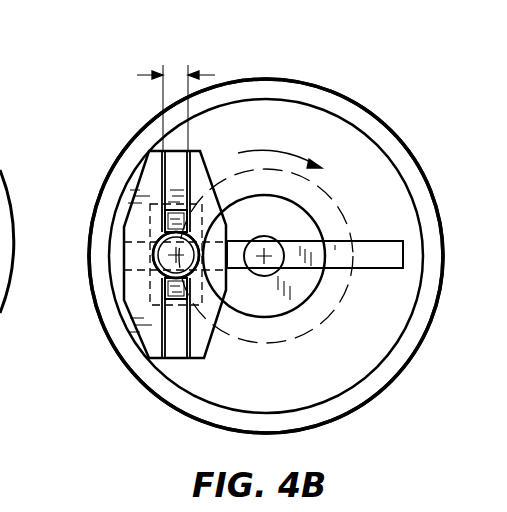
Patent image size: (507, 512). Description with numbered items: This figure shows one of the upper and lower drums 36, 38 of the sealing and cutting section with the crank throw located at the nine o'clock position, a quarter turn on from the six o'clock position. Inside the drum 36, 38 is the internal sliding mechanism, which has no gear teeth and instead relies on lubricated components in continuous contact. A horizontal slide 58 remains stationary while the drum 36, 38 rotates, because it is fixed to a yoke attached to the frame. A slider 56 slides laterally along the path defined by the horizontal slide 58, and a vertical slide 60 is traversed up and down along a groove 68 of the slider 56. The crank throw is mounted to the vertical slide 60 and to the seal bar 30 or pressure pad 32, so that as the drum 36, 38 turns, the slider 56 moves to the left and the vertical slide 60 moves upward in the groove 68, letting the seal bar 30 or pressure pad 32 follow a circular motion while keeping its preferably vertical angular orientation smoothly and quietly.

The upper drum 36 is at (124, 112).
The lower drum 38 is at (266, 256).
The groove 68 is at (215, 75).
The slider 56 is at (138, 225).
The horizontal slide 58 is at (382, 255).
The seal bar 30 is at (124, 291).
The pressure pad 32 is at (99, 303).
The vertical slide 60 is at (152, 296).